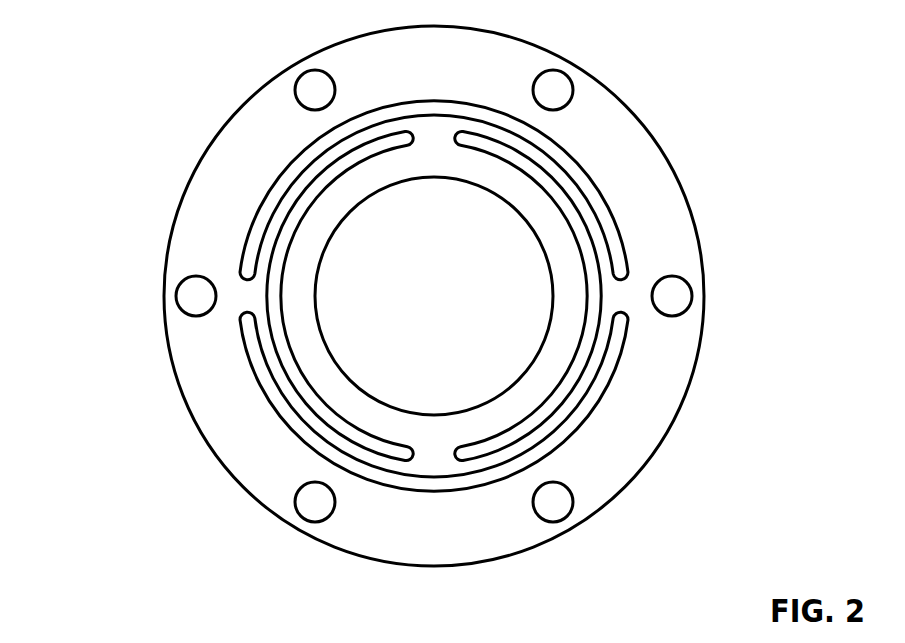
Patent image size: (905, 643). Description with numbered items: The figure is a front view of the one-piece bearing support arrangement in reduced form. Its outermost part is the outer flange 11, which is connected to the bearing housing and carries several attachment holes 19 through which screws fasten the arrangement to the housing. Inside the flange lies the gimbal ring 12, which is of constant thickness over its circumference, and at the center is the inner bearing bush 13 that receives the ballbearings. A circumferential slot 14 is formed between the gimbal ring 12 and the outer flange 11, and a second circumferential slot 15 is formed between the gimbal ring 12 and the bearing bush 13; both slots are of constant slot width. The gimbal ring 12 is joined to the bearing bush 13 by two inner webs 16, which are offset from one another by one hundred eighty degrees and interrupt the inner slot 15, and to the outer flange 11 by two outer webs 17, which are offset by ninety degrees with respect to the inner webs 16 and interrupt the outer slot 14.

The outer flange 11 is at (268, 131).
The gimbal ring 12 is at (547, 166).
The inner bearing bush 13 is at (552, 229).
The circumferential slot 14 is at (603, 375).
The circumferential slot 15 is at (522, 428).
The inner web 16 is at (432, 455).
The outer web 17 is at (245, 295).
The attachment hole 19 is at (312, 496).